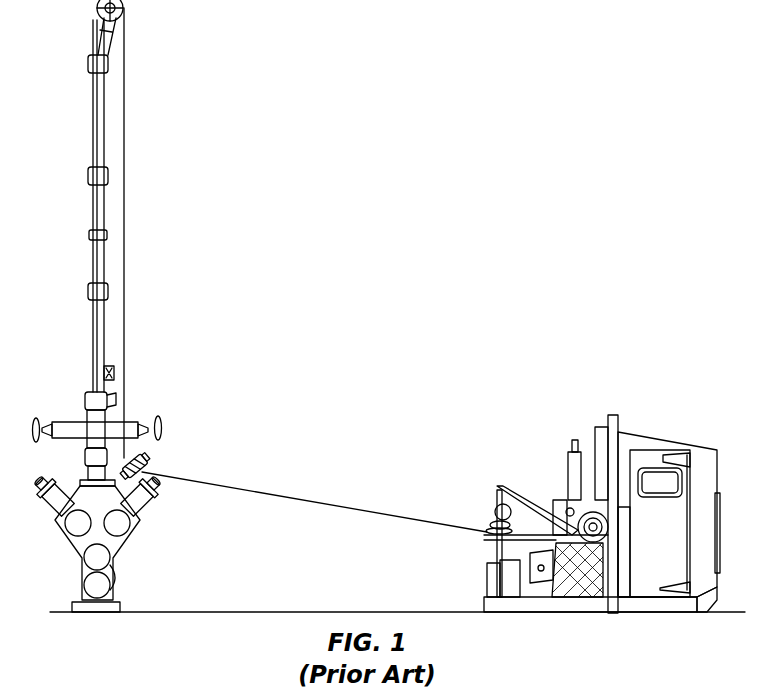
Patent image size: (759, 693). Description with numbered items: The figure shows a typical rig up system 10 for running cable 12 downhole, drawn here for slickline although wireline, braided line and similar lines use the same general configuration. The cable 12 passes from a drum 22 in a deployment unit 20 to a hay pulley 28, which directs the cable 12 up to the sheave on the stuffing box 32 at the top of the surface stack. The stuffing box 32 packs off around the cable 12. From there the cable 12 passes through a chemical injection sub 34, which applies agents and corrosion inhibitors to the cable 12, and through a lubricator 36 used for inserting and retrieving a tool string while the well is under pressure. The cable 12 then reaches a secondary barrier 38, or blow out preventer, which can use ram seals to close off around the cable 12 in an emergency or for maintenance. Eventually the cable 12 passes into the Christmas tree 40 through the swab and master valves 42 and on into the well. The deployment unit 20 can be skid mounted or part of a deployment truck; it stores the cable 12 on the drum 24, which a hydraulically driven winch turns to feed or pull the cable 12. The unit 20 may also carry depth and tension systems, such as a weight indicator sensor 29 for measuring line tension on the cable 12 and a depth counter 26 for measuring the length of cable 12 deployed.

The rig up system 10 is at (463, 141).
The cable 12 is at (302, 500).
The deployment unit 20 is at (565, 370).
The drum 22 is at (683, 450).
The drum 24 is at (563, 500).
The depth counter 26 is at (553, 507).
The hay pulley 28 is at (148, 458).
The weight indicator sensor 29 is at (144, 494).
The stuffing box 32 is at (95, 38).
The chemical injection sub 34 is at (93, 135).
The lubricator 36 is at (93, 215).
The secondary barrier 38 is at (60, 422).
The Christmas tree 40 is at (112, 530).
The swab and master valves 42 is at (109, 574).